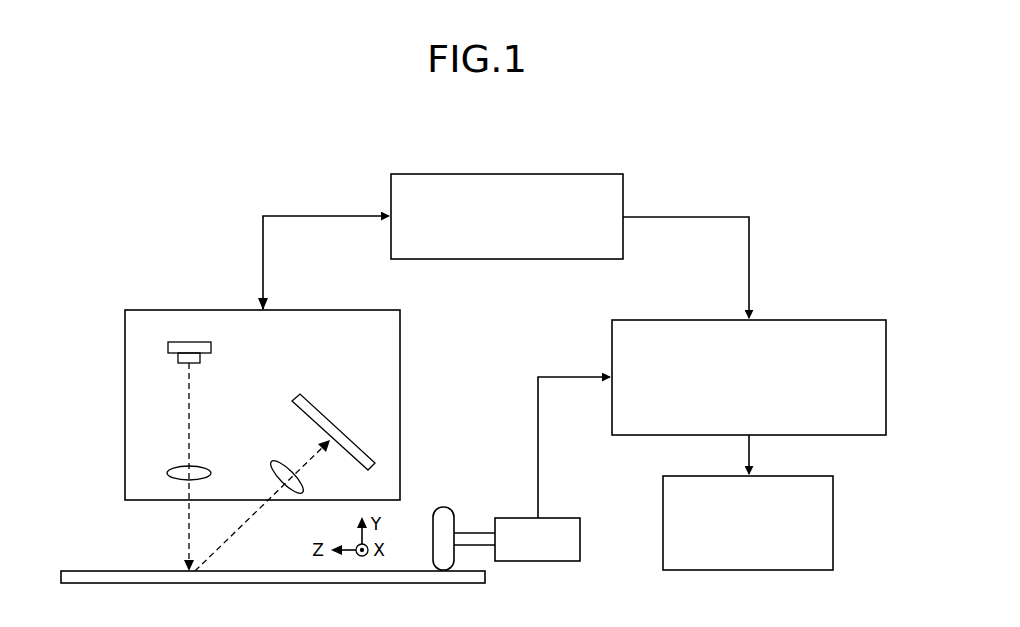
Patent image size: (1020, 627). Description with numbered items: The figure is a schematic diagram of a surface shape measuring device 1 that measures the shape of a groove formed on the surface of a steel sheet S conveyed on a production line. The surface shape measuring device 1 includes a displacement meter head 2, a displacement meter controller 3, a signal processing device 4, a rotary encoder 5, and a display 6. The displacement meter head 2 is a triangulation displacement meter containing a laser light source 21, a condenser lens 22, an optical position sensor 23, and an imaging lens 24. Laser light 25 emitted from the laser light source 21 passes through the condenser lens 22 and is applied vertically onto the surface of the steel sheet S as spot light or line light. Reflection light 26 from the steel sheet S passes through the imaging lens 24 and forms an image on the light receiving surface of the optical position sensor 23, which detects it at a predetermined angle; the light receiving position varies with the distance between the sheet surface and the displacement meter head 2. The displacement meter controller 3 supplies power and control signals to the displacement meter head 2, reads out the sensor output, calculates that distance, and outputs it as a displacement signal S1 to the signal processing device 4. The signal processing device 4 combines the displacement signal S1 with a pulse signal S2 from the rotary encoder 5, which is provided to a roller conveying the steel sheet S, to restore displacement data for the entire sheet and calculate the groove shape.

The surface shape measuring device 1 is at (231, 172).
The displacement meter head 2 is at (154, 310).
The displacement meter controller 3 is at (593, 174).
The signal processing device 4 is at (855, 320).
The rotary encoder 5 is at (510, 517).
The display 6 is at (834, 524).
The laser light source 21 is at (211, 348).
The condenser lens 22 is at (172, 467).
The optical position sensor 23 is at (310, 398).
The imaging lens 24 is at (278, 466).
The laser light 25 is at (185, 540).
The reflection light 26 is at (222, 541).
The steel sheet S is at (80, 571).
The displacement signal S1 is at (699, 267).
The pulse signal S2 is at (574, 447).